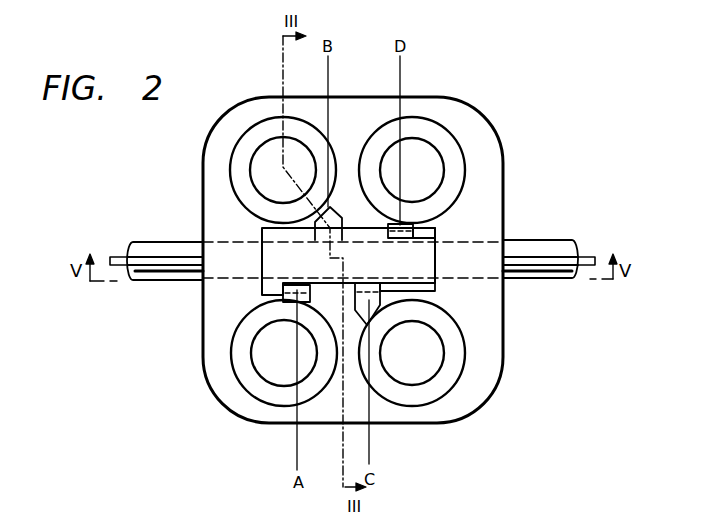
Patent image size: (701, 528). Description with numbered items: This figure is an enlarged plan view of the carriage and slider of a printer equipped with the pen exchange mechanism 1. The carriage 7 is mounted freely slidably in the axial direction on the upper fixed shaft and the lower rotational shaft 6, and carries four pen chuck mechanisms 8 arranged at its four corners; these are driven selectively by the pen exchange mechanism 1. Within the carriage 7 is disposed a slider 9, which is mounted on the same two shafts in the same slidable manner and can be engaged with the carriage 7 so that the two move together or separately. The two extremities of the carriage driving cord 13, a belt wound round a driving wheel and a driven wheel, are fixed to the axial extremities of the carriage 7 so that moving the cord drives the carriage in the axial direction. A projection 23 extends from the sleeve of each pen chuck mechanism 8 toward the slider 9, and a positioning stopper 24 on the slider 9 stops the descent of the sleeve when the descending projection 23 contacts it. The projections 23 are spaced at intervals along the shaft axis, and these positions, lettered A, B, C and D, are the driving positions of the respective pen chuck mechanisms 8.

The pen exchange mechanism 1 is at (530, 118).
The lower rotational shaft 6 is at (558, 280).
The carriage 7 is at (495, 188).
The pen chuck mechanism 8 is at (262, 128).
The slider 9 is at (263, 263).
The carriage driving cord 13 is at (586, 256).
The projection 23 is at (315, 224).
The positioning stopper 24 is at (262, 232).